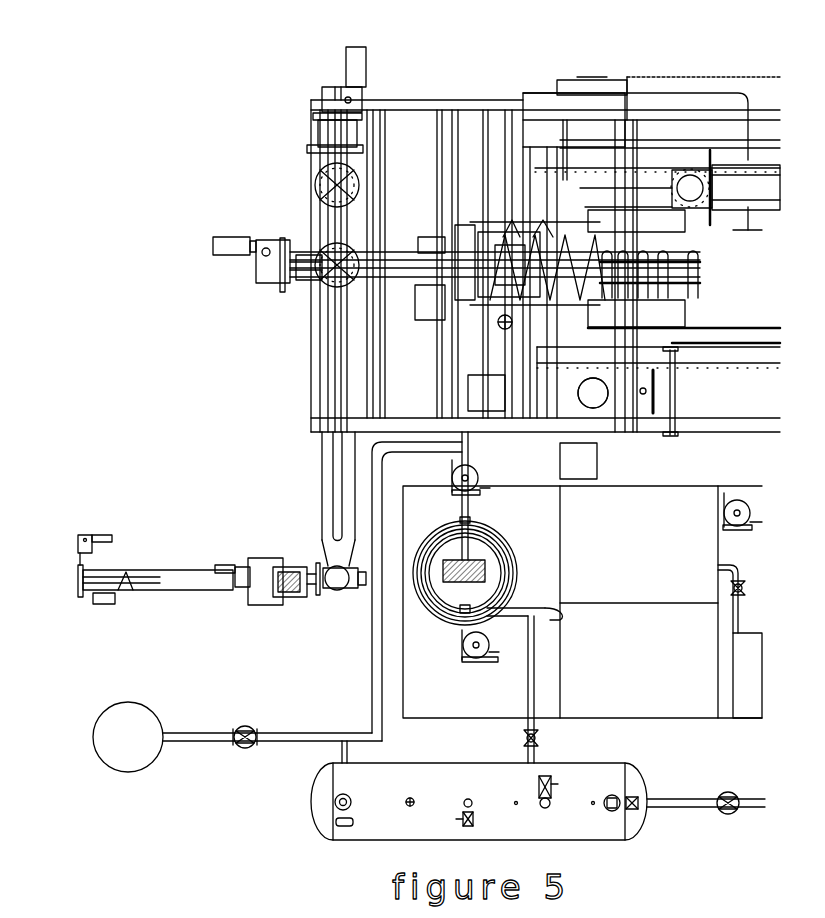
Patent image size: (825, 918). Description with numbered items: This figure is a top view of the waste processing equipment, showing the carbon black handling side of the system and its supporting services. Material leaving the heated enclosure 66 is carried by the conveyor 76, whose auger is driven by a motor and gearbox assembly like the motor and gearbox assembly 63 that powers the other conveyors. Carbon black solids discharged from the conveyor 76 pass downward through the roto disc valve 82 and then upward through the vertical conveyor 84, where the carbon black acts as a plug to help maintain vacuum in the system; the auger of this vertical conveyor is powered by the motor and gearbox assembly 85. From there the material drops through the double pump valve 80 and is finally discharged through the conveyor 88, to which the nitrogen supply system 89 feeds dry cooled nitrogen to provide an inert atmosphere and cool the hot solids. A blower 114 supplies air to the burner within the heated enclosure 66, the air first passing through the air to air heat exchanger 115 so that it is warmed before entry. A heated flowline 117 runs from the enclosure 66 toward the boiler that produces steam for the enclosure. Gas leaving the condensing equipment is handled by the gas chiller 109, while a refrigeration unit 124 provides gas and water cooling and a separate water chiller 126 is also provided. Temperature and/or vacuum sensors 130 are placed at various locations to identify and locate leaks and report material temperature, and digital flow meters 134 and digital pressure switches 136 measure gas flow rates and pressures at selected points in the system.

The motor and gearbox assembly 63 is at (434, 236).
The heated enclosure 66 is at (572, 178).
The conveyor 76 is at (403, 242).
The double pump valve 80 is at (294, 566).
The roto disc valve 82 is at (314, 183).
The vertical conveyor 84 is at (333, 594).
The motor and gearbox assembly 85 is at (352, 572).
The conveyor 88 is at (163, 567).
The nitrogen supply system 89 is at (92, 535).
The gas chiller 109 is at (502, 604).
The blower 114 is at (568, 82).
The air to air heat exchanger 115 is at (725, 180).
The heated flowline 117 is at (638, 186).
The refrigeration unit 124 is at (680, 674).
The water chiller 126 is at (633, 598).
The temperature and/or vacuum sensors 130 is at (316, 128).
The digital flow meter 134 is at (498, 330).
The digital pressure switch 136 is at (539, 429).